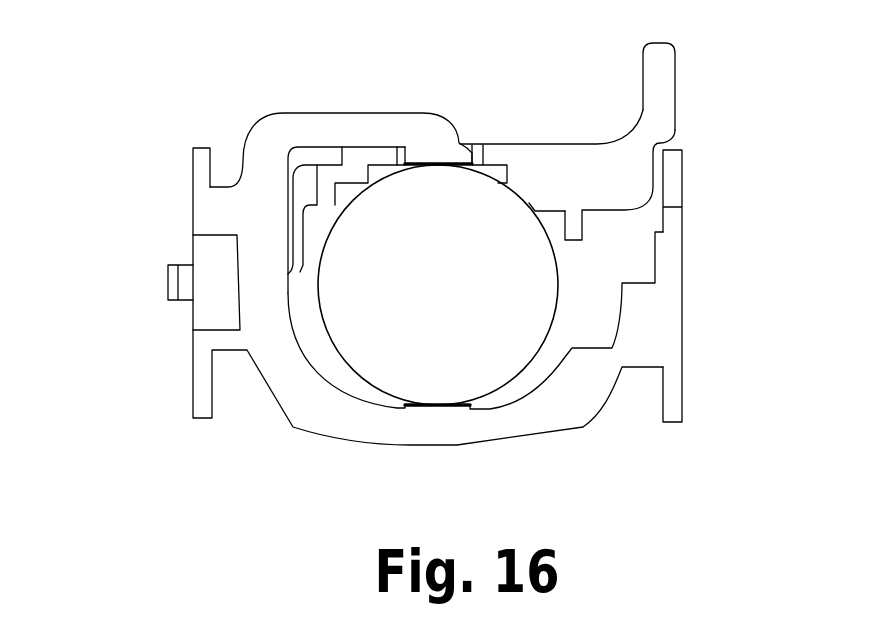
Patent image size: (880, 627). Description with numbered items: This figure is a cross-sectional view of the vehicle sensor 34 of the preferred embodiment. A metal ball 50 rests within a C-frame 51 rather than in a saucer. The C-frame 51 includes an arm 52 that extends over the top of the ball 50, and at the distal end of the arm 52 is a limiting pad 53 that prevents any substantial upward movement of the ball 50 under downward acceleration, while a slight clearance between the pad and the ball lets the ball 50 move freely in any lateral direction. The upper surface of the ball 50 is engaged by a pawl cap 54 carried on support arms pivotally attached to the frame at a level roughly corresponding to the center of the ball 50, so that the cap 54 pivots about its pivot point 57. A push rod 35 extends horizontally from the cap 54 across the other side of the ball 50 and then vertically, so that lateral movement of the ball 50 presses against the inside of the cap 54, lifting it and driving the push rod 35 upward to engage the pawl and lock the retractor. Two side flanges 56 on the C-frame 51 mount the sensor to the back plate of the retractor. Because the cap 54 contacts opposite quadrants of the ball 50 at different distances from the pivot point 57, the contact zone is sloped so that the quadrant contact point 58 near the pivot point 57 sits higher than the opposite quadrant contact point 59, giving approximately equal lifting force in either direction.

The vehicle sensor 34 is at (210, 100).
The push rod 35 is at (663, 58).
The metal ball 50 is at (447, 272).
The C-frame 51 is at (250, 198).
The arm 52 is at (308, 127).
The limiting pad 53 is at (440, 148).
The pawl cap 54 is at (633, 158).
The side flanges 56 is at (193, 397).
The pivot point 57 is at (220, 283).
The quadrant contact point 58 is at (363, 183).
The opposite quadrant contact point 59 is at (530, 205).